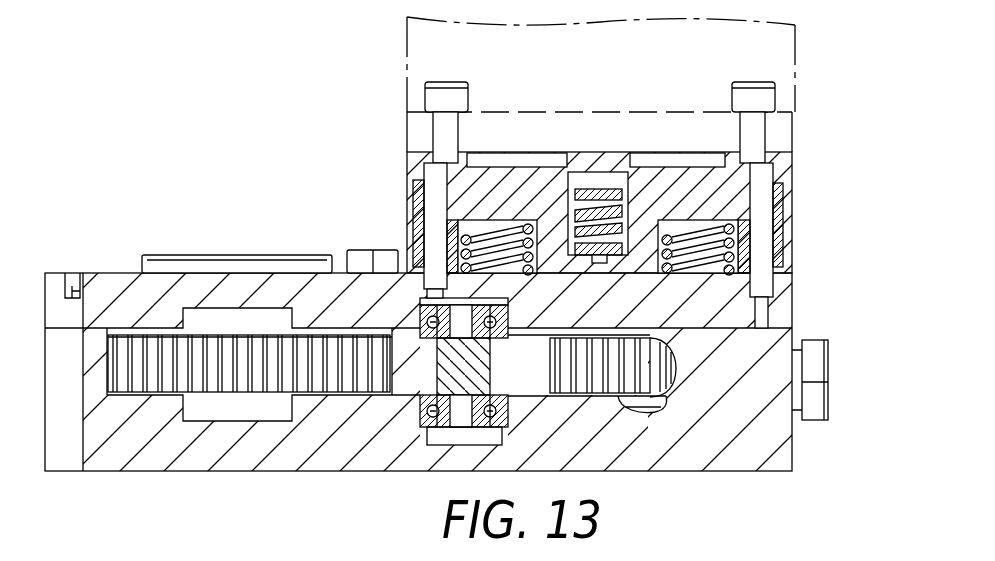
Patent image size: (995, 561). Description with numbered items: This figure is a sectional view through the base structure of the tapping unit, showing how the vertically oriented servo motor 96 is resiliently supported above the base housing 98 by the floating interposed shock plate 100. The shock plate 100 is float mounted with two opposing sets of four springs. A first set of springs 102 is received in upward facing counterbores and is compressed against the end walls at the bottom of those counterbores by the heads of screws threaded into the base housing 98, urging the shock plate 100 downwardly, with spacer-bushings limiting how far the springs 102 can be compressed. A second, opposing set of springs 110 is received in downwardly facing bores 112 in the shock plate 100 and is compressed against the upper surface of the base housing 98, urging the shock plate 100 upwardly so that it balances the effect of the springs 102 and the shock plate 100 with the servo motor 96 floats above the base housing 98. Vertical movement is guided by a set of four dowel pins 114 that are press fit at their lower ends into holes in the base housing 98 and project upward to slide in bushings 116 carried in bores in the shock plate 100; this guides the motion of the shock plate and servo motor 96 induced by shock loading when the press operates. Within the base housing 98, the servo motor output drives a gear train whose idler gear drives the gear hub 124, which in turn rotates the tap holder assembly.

The servo motor 96 is at (797, 80).
The housing 98 is at (794, 457).
The shock plate 100 is at (486, 158).
The springs 102 is at (583, 212).
The springs 110 is at (505, 230).
The bores 112 is at (455, 217).
The dowel pins 114 is at (433, 172).
The bushings 116 is at (418, 226).
The gear hub 124 is at (150, 256).